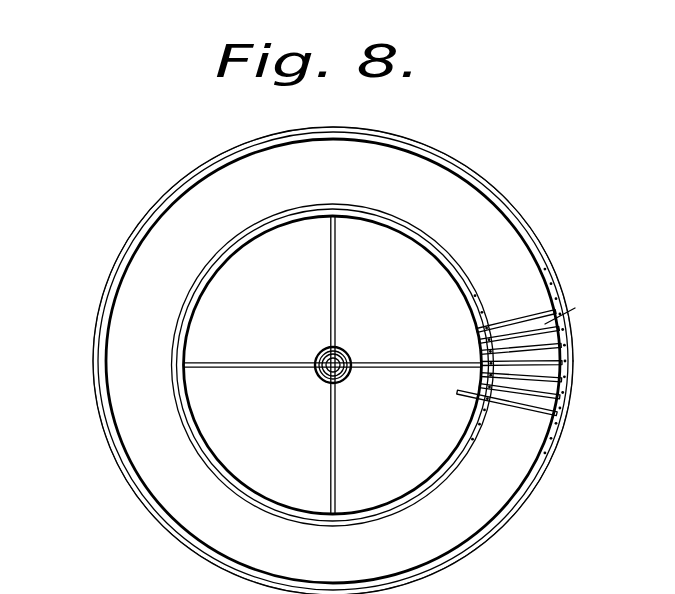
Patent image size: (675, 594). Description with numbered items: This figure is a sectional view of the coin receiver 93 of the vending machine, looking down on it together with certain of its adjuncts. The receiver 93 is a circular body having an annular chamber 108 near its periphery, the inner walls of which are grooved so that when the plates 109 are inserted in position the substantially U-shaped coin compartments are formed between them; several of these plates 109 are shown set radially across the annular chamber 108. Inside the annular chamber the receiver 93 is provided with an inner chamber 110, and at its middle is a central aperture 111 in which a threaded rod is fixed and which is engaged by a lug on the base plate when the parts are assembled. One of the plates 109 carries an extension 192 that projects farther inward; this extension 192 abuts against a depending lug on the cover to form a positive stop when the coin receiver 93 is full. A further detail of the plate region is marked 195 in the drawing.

The receiver 93 is at (309, 360).
The annular chamber 108 is at (333, 360).
The plates 109 is at (512, 324).
The inner chamber 110 is at (333, 365).
The central aperture 111 is at (340, 358).
The extension 192 is at (490, 409).
The slot between bars 195 is at (577, 312).